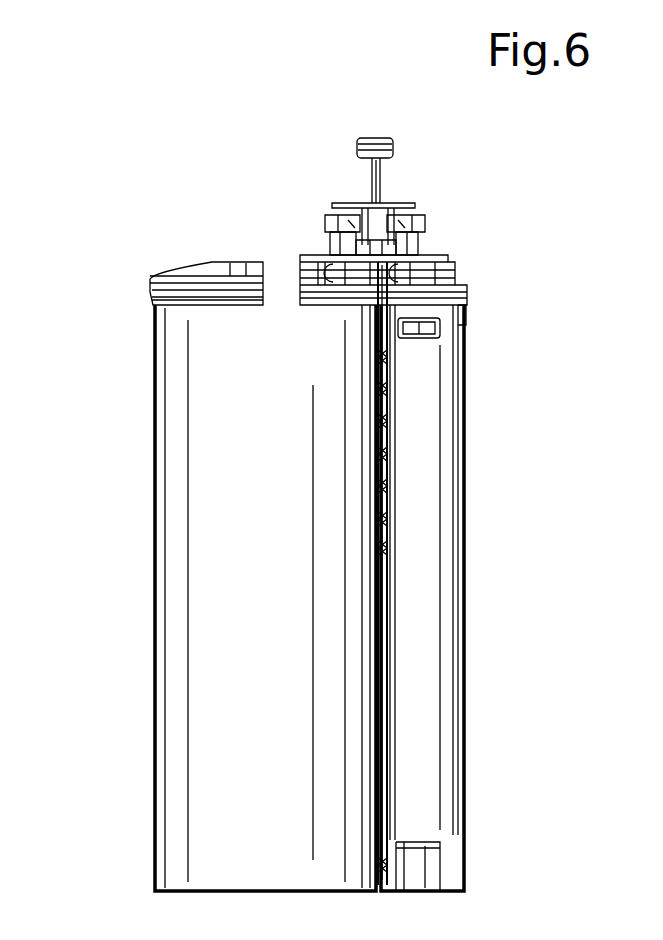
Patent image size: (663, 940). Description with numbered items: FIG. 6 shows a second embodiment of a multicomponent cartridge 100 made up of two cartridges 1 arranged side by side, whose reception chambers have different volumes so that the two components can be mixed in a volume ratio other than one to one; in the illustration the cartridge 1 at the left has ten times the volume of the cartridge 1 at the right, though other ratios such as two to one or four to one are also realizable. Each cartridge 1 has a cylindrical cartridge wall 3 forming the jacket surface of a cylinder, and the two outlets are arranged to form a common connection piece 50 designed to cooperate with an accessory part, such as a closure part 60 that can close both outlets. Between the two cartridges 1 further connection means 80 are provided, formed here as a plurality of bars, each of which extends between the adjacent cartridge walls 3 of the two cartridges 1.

The multicomponent cartridge 100 is at (128, 234).
The cartridge 1 is at (153, 608).
The cartridge wall 3 is at (153, 764).
The connection piece 50 is at (432, 252).
The closure part 60 is at (372, 181).
The connection means 80 is at (384, 505).